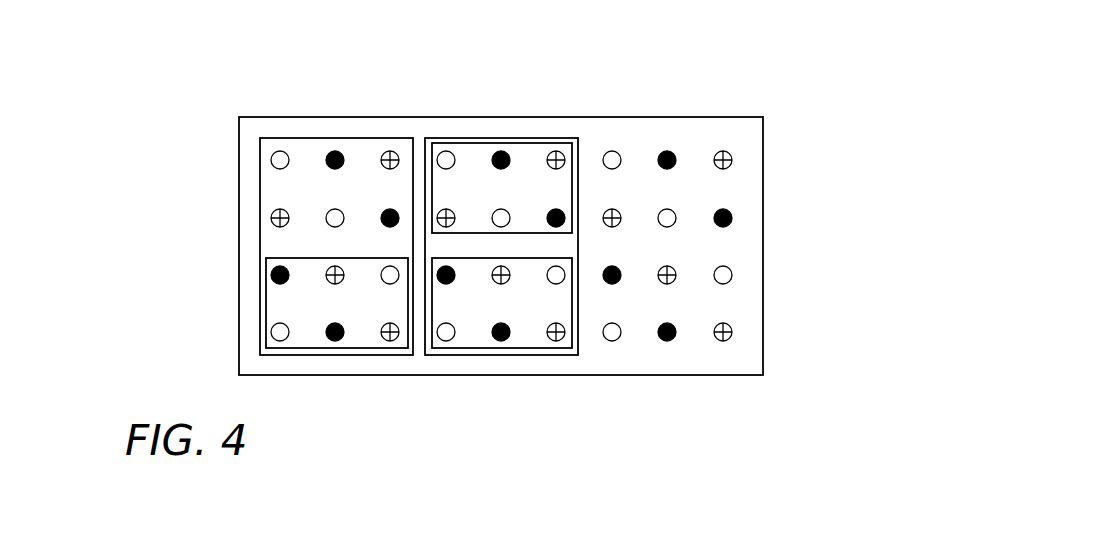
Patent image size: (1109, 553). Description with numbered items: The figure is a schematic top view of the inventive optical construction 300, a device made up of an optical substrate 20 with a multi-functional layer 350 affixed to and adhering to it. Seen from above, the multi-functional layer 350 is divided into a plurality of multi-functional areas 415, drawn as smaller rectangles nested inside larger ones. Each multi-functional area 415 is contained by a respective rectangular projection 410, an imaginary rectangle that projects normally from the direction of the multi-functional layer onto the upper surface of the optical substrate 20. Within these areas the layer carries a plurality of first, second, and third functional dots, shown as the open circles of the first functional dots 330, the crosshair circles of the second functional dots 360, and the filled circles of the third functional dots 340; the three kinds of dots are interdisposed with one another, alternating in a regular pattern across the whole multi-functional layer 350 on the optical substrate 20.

The optical construction 300 is at (795, 72).
The optical substrate 20 is at (753, 355).
The multi-functional layer 350 is at (168, 272).
The rectangular projection 410 is at (305, 140).
The multi-functional area 415 is at (279, 301).
The first functional dot 330 is at (284, 336).
The third functional dot 340 is at (338, 158).
The second functional dot 360 is at (675, 272).